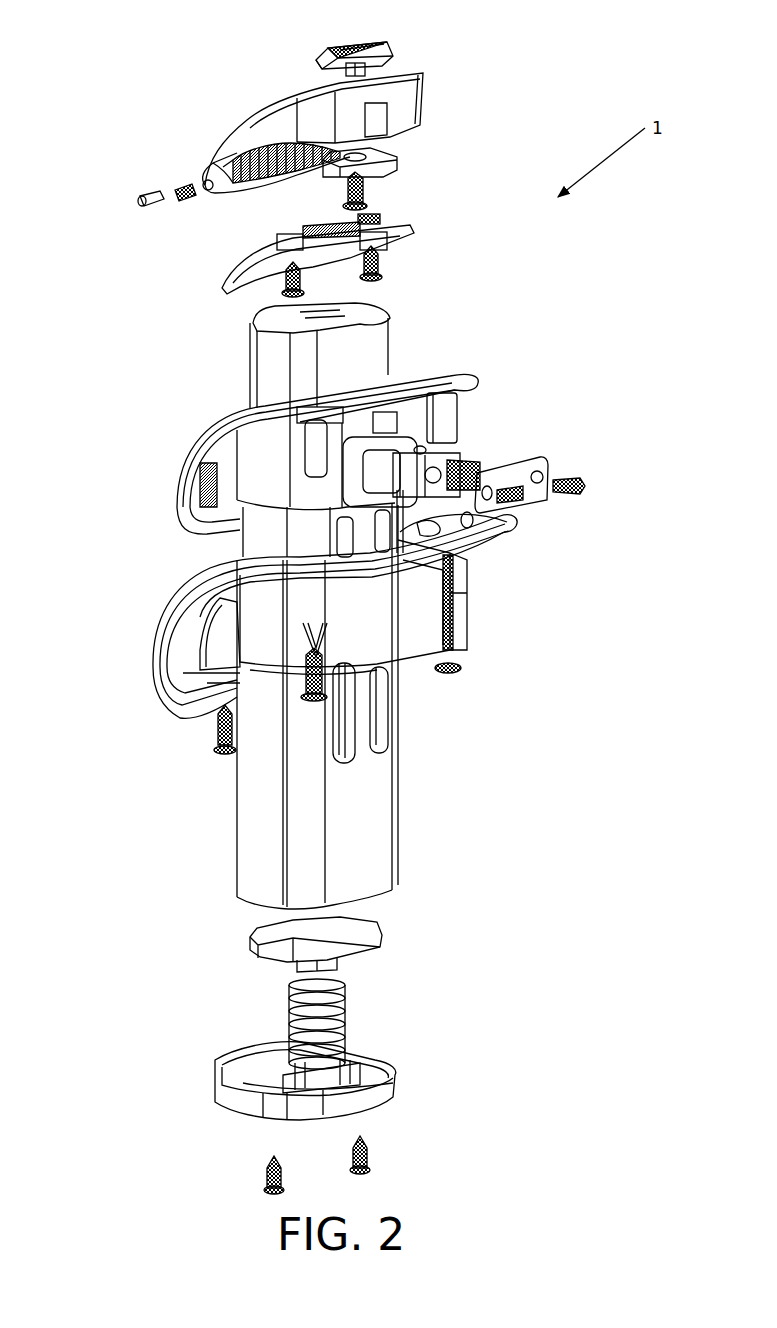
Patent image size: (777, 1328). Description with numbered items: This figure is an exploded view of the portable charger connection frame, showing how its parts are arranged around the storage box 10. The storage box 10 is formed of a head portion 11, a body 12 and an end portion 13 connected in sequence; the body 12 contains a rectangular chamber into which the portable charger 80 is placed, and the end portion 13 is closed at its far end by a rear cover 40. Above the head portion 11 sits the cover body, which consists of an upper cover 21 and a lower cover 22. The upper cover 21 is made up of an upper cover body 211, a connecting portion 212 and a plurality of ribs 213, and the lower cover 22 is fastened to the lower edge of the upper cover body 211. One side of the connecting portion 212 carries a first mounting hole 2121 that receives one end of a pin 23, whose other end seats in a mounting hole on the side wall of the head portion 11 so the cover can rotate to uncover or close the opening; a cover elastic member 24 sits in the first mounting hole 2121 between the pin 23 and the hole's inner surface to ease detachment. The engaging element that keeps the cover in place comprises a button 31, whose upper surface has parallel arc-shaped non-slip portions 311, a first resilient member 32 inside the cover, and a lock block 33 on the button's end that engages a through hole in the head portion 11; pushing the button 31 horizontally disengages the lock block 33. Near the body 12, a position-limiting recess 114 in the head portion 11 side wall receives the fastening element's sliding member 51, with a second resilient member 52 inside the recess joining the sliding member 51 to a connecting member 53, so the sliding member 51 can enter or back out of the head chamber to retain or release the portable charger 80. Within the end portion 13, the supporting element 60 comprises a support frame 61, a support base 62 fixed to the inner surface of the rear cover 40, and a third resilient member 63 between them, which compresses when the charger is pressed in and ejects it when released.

The storage box 10 is at (335, 664).
The head portion 11 is at (354, 431).
The body 12 is at (395, 770).
The end portion 13 is at (395, 868).
The upper cover 21 is at (157, 76).
The upper cover body 211 is at (262, 135).
The connecting portion 212 is at (218, 187).
The ribs 213 is at (240, 160).
The first mounting hole 2121 is at (213, 189).
The lower cover 22 is at (265, 275).
The pin 23 is at (136, 198).
The cover elastic member 24 is at (178, 190).
The button 31 is at (390, 52).
The non-slip portions 311 is at (355, 42).
The first resilient member 32 is at (322, 182).
The lock block 33 is at (398, 165).
The rear cover 40 is at (400, 1085).
The sliding member 51 is at (458, 470).
The second resilient member 52 is at (490, 467).
The connecting member 53 is at (545, 473).
The supporting element 60 is at (215, 908).
The support frame 61 is at (282, 942).
The support base 62 is at (290, 1067).
The third resilient member 63 is at (295, 1020).
The portable charger 80 is at (275, 347).
The position-limiting recess 114 is at (430, 442).